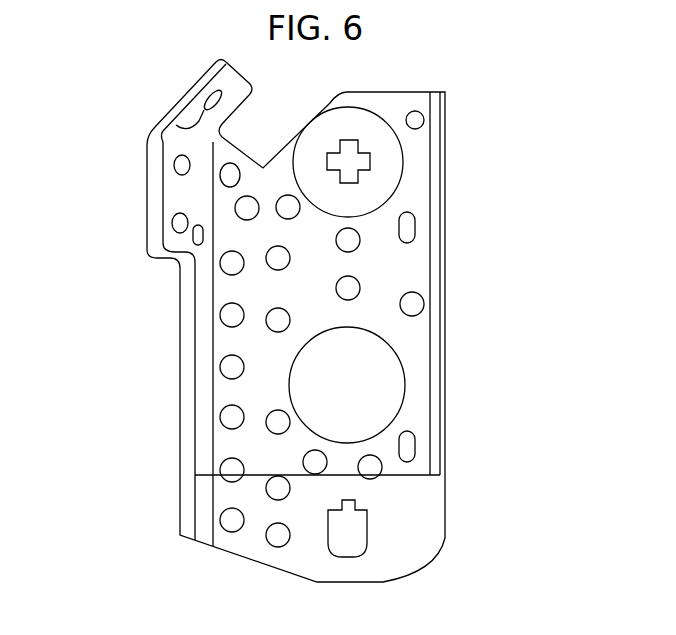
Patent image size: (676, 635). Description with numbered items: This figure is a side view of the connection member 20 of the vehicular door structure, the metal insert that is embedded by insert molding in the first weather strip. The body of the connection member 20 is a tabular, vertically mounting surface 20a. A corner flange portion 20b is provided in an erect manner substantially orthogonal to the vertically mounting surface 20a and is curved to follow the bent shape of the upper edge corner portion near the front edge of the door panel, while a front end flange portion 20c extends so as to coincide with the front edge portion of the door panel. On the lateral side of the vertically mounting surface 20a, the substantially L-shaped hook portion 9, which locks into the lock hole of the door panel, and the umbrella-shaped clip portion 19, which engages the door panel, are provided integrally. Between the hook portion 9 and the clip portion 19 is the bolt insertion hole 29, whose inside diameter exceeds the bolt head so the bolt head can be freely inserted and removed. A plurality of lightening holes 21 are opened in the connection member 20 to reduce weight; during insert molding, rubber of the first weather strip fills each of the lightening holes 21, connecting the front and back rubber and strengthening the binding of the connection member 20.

The connection member 20 is at (455, 112).
The vertically mounting surface 20a is at (423, 349).
The corner flange portion 20b is at (180, 128).
The front end flange portion 20c is at (207, 387).
The clip portion 19 is at (362, 162).
The bolt insertion hole 29 is at (398, 388).
The hook portion 9 is at (355, 537).
The lightening holes 21 is at (285, 196).